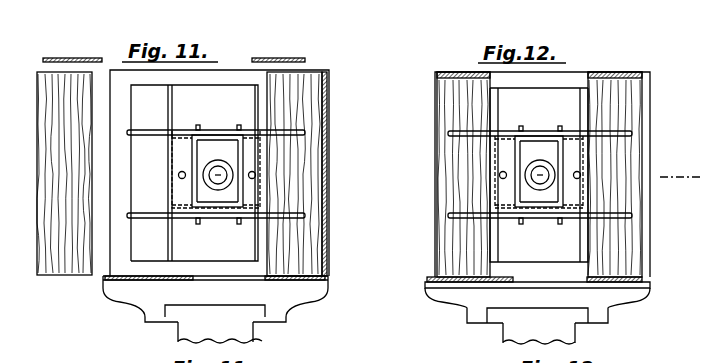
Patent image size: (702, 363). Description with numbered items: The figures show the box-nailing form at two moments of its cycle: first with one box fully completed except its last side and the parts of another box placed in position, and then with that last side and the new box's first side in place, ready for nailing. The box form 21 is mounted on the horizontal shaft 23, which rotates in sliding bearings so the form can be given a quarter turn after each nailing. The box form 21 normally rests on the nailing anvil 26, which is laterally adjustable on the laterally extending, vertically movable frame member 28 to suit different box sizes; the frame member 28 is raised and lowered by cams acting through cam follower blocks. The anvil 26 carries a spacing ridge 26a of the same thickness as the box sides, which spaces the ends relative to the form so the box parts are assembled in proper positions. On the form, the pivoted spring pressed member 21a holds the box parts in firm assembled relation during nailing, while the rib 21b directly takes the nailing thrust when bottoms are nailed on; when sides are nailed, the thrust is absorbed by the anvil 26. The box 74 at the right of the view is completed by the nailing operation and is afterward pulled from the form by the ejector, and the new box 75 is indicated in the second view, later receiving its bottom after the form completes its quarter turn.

In FIG. 11, the box form 21 is at (119, 260).
In FIG. 12, the box form 21 is at (558, 272).
In FIG. 11, the spring pressed member 21a is at (262, 218).
In FIG. 11, the rib 21b is at (258, 109).
In FIG. 12, the rib 21b is at (582, 247).
In FIG. 11, the horizontal shaft 23 is at (222, 174).
In FIG. 12, the horizontal shaft 23 is at (545, 175).
In FIG. 11, the nailing anvil 26 is at (146, 292).
In FIG. 12, the nailing anvil 26 is at (478, 294).
In FIG. 11, the spacing ridge 26a is at (105, 277).
In FIG. 12, the spacing ridge 26a is at (425, 279).
In FIG. 11, the frame member 28 is at (200, 322).
In FIG. 12, the frame member 28 is at (518, 326).
In FIG. 11, the box 74 is at (297, 236).
In FIG. 12, the box 74 is at (633, 121).
In FIG. 12, the new box 75 is at (462, 166).